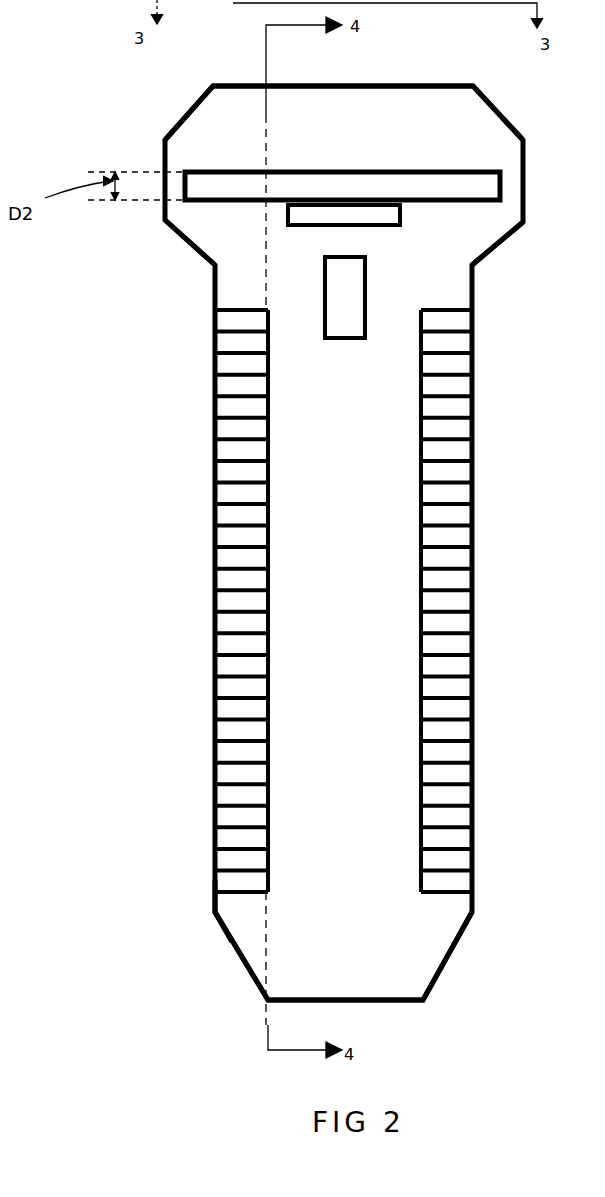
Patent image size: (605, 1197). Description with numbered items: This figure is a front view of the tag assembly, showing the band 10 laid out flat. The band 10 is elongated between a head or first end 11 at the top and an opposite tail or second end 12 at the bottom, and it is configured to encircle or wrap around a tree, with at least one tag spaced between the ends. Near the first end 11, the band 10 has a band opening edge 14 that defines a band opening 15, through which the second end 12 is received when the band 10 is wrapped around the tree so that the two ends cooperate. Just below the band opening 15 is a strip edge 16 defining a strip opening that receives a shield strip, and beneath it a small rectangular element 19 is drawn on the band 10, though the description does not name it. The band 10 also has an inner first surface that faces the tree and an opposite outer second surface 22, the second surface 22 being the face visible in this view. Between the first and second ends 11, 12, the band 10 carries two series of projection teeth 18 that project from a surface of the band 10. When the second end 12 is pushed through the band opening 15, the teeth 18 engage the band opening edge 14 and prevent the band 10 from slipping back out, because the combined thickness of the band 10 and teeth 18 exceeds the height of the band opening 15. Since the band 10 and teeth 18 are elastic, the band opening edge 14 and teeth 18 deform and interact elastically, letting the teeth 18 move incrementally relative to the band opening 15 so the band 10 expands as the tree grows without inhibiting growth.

The band 10 is at (300, 495).
The first end 11 is at (524, 99).
The second end 12 is at (478, 968).
The band opening edge 14 is at (207, 210).
The band opening 15 is at (452, 187).
The strip edge 16 is at (378, 222).
The projection teeth 18 is at (222, 465).
The opening 19 is at (347, 320).
The second surface 22 is at (232, 912).